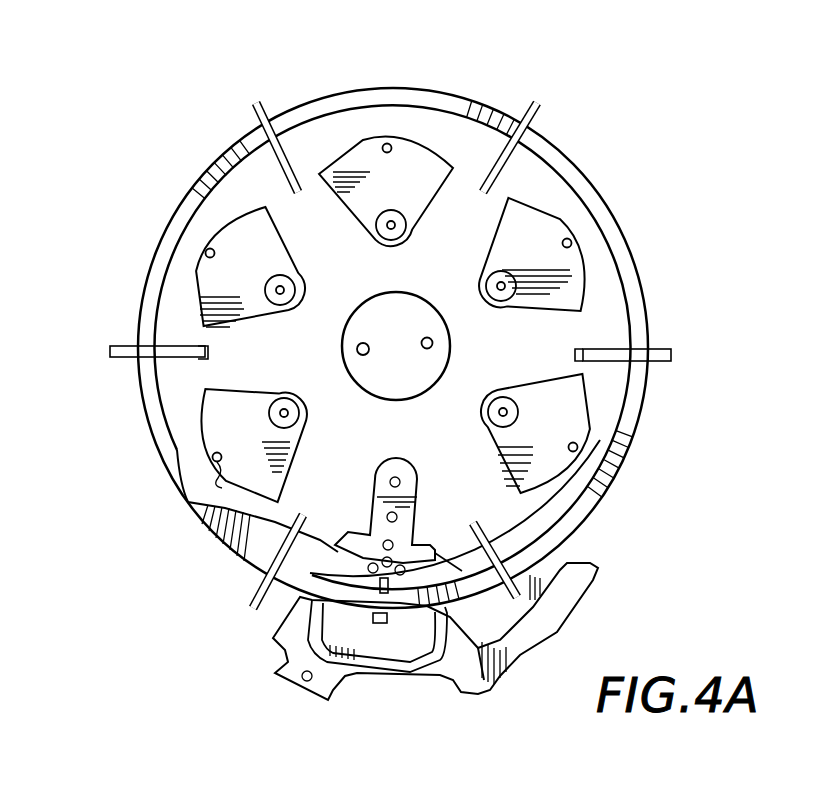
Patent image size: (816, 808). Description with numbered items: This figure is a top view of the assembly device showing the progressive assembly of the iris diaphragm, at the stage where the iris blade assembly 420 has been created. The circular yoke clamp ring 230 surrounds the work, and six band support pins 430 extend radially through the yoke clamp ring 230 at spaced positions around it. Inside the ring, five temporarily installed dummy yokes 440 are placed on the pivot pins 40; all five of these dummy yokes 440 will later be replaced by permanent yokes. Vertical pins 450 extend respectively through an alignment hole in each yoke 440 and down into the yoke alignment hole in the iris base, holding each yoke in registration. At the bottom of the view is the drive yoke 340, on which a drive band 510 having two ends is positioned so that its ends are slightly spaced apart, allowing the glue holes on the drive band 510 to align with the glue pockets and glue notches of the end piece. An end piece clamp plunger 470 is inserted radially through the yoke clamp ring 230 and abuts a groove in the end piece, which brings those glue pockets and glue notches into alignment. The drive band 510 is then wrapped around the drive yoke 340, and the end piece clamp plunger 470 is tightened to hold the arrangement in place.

The yoke clamp ring 230 is at (203, 126).
The iris blade assembly 420 is at (160, 455).
The band support pins 430 is at (262, 100).
The dummy yokes 440 is at (377, 204).
The pivot pins 40 is at (380, 236).
The vertical pins 450 is at (388, 144).
The drive band 510 is at (606, 226).
The drive yoke 340 is at (413, 463).
The end piece clamp plunger 470 is at (402, 622).